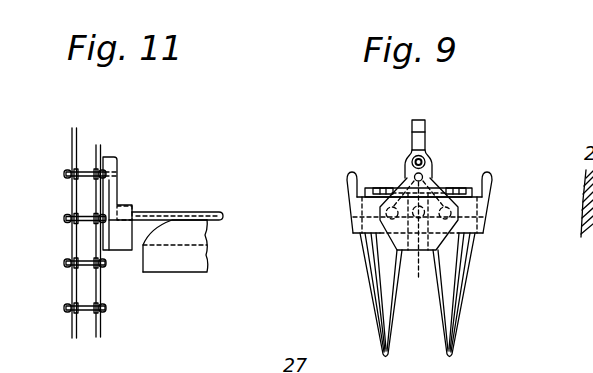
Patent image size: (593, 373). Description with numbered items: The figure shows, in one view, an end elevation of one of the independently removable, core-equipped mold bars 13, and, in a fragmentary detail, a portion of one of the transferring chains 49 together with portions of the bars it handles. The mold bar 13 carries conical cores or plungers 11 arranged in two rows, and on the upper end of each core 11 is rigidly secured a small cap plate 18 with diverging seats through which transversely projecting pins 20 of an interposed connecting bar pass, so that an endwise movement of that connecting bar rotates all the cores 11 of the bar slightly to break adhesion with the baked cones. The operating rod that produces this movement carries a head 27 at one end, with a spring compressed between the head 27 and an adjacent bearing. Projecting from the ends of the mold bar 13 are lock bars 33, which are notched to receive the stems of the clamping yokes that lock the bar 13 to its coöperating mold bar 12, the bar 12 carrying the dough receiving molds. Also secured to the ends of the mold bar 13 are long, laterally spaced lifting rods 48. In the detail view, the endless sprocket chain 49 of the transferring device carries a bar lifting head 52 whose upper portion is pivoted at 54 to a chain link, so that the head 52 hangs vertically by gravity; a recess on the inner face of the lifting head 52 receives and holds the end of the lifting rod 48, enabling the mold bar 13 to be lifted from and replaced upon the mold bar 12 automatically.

In FIG. 11, the endless sprocket chain 49 is at (67, 199).
In FIG. 11, the pivot 54 is at (119, 173).
In FIG. 9, the pivot 54 is at (424, 161).
In FIG. 11, the bar lifting head 52 is at (122, 232).
In FIG. 9, the bar lifting head 52 is at (400, 238).
In FIG. 11, the lifting rod 48 is at (178, 214).
In FIG. 9, the lifting rod 48 is at (357, 218).
In FIG. 11, the mold bar 12 is at (200, 258).
In FIG. 9, the head 27 is at (424, 133).
In FIG. 9, the transversely projecting pin 20 is at (363, 189).
In FIG. 9, the cap plate 18 is at (388, 188).
In FIG. 9, the mold bar 13 is at (485, 212).
In FIG. 9, the lock bar 33 is at (419, 243).
In FIG. 9, the conical core 11 is at (457, 289).